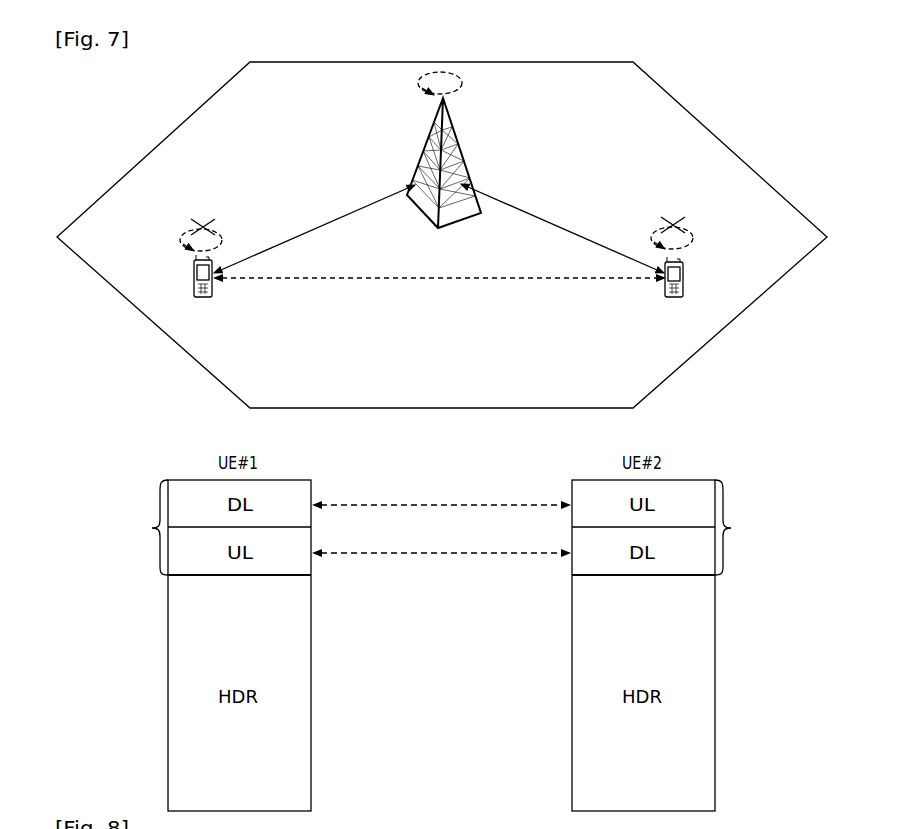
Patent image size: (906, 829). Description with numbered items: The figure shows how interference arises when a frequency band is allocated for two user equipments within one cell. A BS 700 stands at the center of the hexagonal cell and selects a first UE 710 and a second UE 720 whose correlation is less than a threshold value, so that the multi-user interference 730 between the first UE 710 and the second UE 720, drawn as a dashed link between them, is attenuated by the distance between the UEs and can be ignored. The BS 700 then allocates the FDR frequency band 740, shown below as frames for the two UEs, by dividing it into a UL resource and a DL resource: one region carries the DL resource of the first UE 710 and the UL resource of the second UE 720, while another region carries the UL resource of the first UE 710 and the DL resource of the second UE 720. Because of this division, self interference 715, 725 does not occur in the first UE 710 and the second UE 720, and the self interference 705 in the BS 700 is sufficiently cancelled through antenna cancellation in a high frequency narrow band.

The BS 700 is at (472, 167).
The self interference in the BS 705 is at (464, 86).
The first UE 710 is at (193, 277).
The self interference 715 is at (203, 222).
The second UE 720 is at (684, 277).
The self interference 725 is at (674, 222).
The multi-user interference 730 is at (438, 279).
The FDR frequency band 740 is at (442, 527).